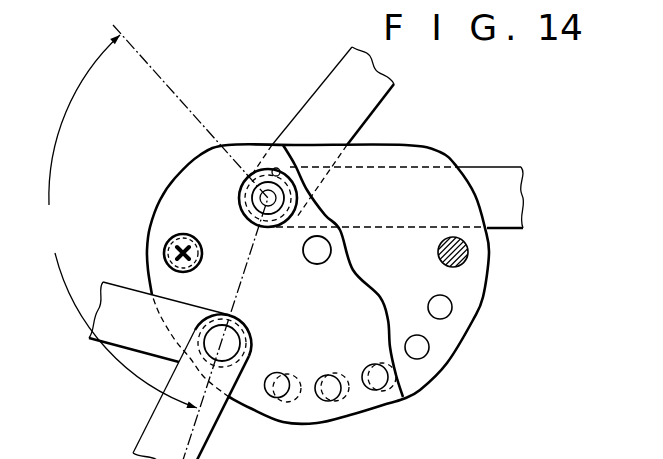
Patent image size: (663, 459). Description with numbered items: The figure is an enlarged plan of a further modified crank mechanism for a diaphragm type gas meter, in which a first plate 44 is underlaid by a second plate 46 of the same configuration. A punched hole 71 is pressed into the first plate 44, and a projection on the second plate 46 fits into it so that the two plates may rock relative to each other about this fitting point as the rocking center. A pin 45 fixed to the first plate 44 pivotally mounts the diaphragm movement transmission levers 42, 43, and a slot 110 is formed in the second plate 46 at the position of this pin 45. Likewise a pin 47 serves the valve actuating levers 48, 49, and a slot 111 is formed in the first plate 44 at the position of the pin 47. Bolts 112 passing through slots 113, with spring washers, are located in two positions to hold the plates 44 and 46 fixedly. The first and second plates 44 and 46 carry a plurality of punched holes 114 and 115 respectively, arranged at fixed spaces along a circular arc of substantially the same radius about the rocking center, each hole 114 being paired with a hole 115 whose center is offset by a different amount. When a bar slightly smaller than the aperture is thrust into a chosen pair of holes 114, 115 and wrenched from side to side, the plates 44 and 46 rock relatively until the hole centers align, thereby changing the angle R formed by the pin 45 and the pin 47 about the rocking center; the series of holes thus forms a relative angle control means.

The diaphragm movement transmission lever 42 is at (127, 295).
The diaphragm movement transmission lever 43 is at (205, 444).
The first crank plate 44 is at (389, 403).
The pin 45 is at (241, 329).
The second crank plate 46 is at (429, 367).
The pin 47 is at (254, 190).
The valve actuating lever 48 is at (524, 208).
The valve actuating lever 49 is at (394, 84).
The punched hole 71 is at (317, 264).
The slot 110 is at (240, 345).
The slot 111 is at (276, 168).
The bolt 112 is at (194, 266).
The slot 113 is at (183, 234).
The punched hole 114 is at (318, 382).
The punched hole 115 is at (429, 343).
The angle R is at (156, 242).